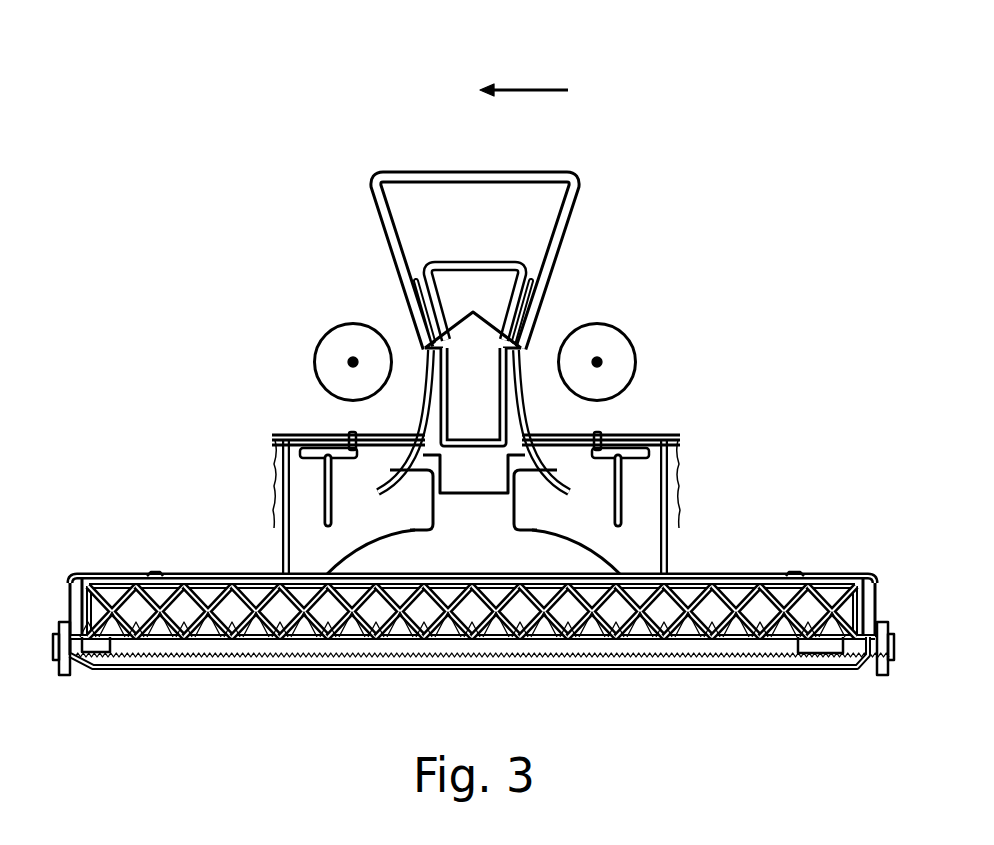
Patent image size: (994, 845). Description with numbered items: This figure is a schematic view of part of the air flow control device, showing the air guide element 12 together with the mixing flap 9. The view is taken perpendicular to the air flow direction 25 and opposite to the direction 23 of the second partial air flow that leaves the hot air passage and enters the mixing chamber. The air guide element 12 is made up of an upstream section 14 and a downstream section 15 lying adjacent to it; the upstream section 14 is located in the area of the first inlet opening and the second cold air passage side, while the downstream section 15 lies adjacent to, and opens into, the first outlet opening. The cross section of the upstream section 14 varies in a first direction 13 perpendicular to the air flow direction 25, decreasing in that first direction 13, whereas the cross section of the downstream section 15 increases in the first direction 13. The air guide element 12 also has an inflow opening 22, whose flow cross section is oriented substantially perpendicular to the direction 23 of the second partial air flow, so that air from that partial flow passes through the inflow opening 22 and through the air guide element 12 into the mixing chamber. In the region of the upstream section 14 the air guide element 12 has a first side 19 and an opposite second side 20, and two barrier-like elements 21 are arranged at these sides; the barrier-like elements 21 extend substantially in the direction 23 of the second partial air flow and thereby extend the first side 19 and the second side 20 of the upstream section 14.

The mixing flap 9 is at (195, 575).
The air guide element 12 is at (362, 162).
The first direction 13 is at (530, 89).
The upstream section 14 is at (667, 555).
The downstream section 15 is at (563, 228).
The first side 19 is at (373, 538).
The second side 20 is at (612, 552).
The barrier-like elements 21 is at (423, 505).
The inflow opening 22 is at (473, 310).
The direction of the second partial air flow 23 is at (353, 323).
The air flow direction 25 is at (460, 394).